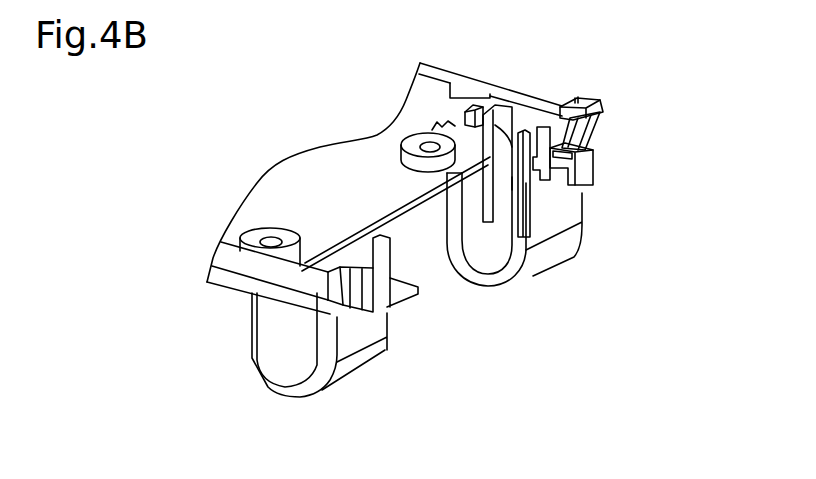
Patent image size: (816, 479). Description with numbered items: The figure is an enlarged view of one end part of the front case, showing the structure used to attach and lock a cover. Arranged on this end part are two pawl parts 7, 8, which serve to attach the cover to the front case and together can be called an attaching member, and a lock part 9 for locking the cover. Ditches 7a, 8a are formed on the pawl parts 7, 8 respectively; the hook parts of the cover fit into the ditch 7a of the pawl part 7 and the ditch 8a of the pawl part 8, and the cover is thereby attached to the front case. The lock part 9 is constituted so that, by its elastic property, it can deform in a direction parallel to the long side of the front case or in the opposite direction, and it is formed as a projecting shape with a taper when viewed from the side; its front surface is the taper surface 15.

The pawl part 7 is at (350, 290).
The ditch 7a is at (328, 273).
The pawl part 8 is at (594, 168).
The ditch 8a is at (587, 170).
The lock part 9 is at (570, 94).
The taper surface 15 is at (602, 118).